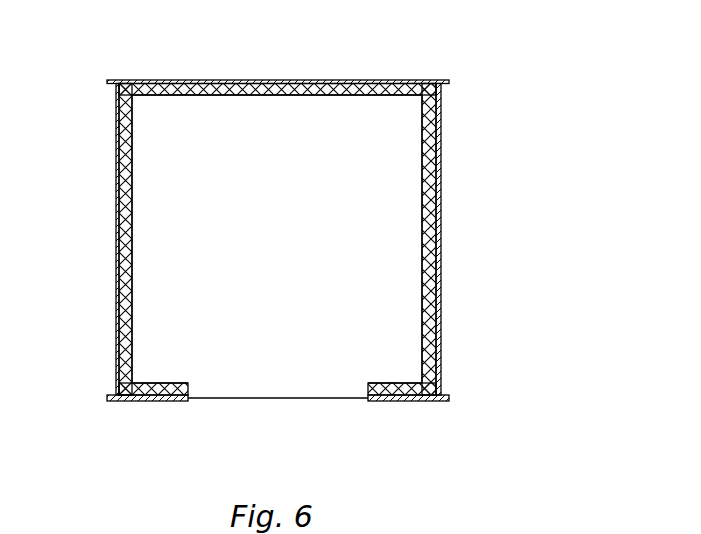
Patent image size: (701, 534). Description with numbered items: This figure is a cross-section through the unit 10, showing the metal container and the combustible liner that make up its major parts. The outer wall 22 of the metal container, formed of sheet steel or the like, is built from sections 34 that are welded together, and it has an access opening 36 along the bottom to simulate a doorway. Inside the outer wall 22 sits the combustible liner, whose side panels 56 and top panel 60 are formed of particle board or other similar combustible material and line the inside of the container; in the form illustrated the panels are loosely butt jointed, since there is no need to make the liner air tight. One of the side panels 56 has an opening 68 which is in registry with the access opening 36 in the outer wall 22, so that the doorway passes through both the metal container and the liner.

The unit 10 is at (360, 236).
The outer wall 22 is at (208, 82).
The sections 34 is at (438, 122).
The access opening 36 is at (188, 398).
The side panels 56 is at (134, 223).
The top panel 60 is at (277, 239).
The opening 68 is at (188, 392).